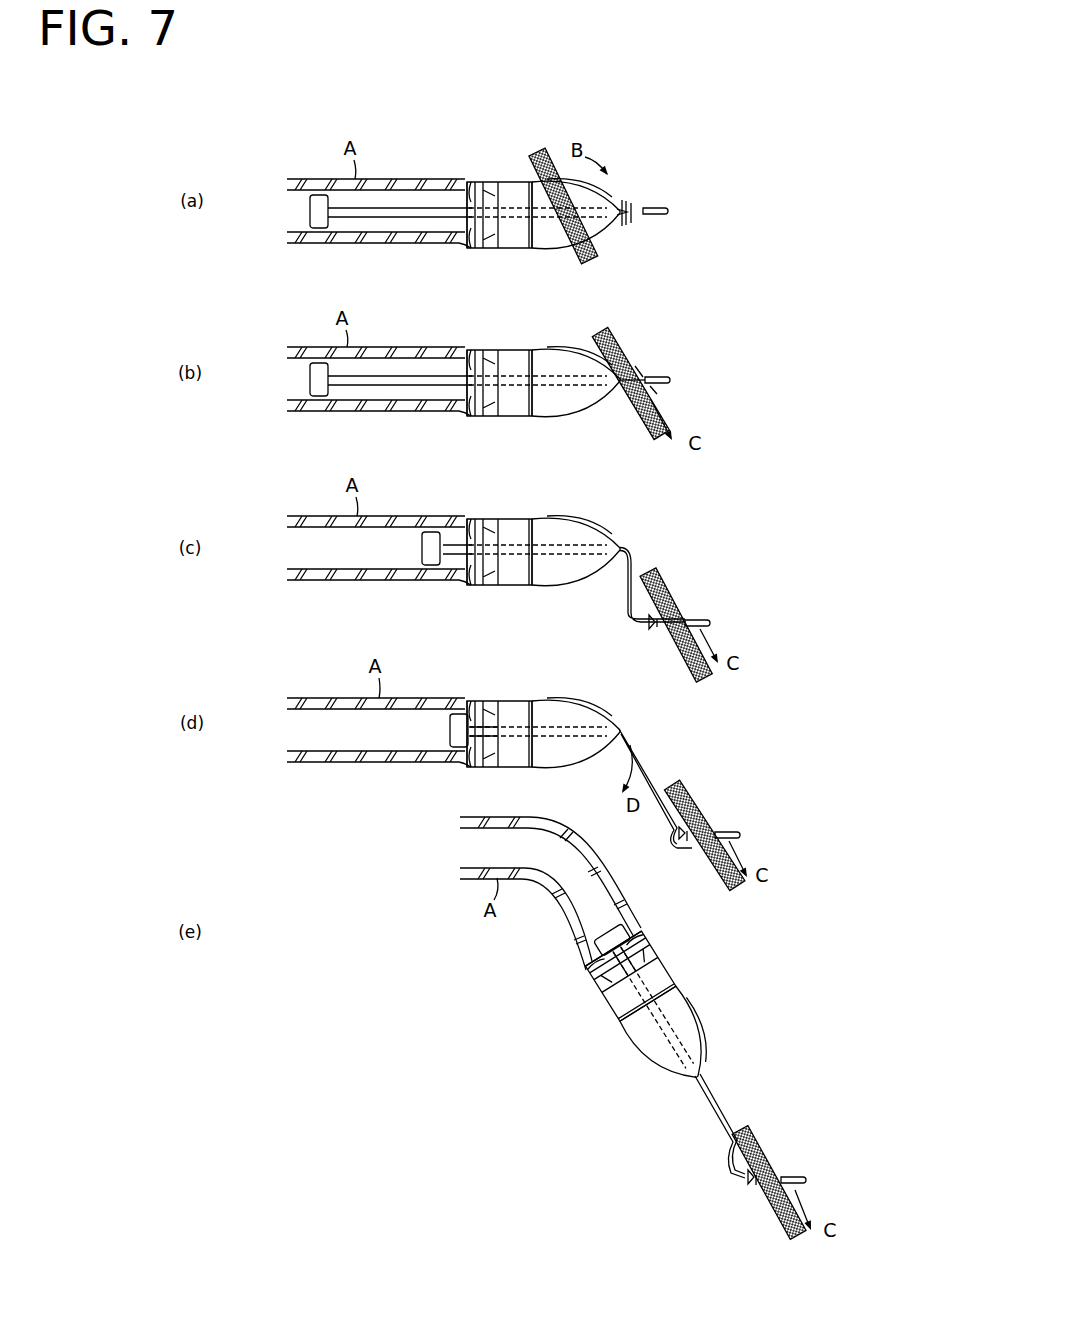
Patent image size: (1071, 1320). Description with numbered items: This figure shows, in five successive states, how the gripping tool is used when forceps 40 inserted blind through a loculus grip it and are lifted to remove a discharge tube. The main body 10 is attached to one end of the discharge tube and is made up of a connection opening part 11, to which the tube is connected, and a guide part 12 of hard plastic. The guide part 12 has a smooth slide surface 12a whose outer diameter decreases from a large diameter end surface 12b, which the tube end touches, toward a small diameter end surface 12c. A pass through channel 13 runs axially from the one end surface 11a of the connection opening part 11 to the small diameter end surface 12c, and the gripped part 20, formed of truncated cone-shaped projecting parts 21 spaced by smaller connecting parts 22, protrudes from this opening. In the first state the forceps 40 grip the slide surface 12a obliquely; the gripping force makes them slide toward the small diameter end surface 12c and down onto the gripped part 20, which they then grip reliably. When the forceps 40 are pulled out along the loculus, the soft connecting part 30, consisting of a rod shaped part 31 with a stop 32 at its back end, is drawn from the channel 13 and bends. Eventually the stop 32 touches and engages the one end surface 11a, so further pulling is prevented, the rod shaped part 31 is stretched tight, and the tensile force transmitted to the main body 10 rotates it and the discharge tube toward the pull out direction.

The main body 10 is at (532, 653).
The connection opening part 11 is at (531, 601).
The one end surface 11a is at (600, 960).
The guide part 12 is at (660, 1118).
The slide surface 12a is at (661, 599).
The large diameter end surface 12b is at (572, 606).
The small diameter end surface 12c is at (697, 693).
The pass through channel 13 is at (640, 1098).
The gripped part 20 is at (718, 688).
The projecting part 21 is at (704, 701).
The connecting part 22 is at (701, 692).
The connecting part 30 is at (507, 601).
The rod shaped part 31 is at (645, 1028).
The stop 32 is at (685, 943).
The forceps 40 is at (643, 685).